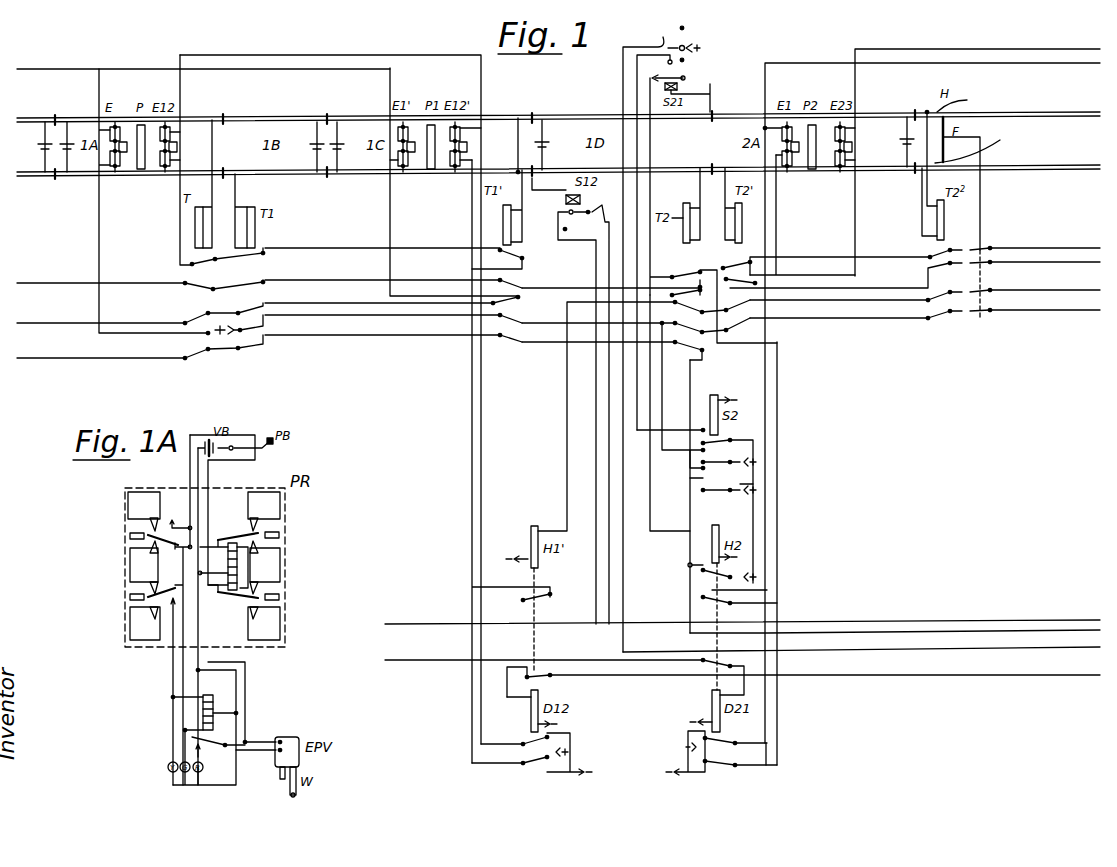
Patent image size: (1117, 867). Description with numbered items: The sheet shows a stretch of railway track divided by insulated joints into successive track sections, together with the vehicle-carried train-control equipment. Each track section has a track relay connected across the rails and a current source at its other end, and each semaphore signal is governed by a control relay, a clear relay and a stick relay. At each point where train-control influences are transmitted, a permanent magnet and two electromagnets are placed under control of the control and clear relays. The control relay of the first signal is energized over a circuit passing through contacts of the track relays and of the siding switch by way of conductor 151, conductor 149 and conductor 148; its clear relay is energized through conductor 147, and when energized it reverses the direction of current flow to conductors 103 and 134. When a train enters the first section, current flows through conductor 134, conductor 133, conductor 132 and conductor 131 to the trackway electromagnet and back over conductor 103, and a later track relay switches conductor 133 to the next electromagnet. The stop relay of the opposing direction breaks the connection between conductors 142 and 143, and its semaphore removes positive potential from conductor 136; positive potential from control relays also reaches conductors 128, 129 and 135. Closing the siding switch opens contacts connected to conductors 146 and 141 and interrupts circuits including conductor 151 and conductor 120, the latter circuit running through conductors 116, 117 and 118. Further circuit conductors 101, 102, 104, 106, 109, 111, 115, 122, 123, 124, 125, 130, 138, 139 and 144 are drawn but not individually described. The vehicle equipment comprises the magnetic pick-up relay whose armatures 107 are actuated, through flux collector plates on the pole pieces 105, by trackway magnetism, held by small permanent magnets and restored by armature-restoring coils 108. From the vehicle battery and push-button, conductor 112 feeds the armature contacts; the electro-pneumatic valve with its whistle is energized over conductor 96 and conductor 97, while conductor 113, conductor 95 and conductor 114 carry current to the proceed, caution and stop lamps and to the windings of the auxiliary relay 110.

In FIG. 1, the supply line 101 is at (31, 69).
In FIG. 1, the supply line 102 is at (1080, 63).
In FIG. 1, the conductor 103 is at (300, 55).
In FIG. 1A, the conductor 103 is at (130, 536).
In FIG. 1, the supply line 104 is at (1083, 49).
In FIG. 1, the pole piece 105 is at (58, 323).
In FIG. 1A, the pole piece 105 is at (152, 525).
In FIG. 1, the control line 106 is at (348, 280).
In FIG. 1, the armature 107 is at (567, 288).
In FIG. 1A, the armature 107 is at (148, 537).
In FIG. 1, the armature-restoring coil 108 is at (650, 488).
In FIG. 1A, the armature-restoring coil 108 is at (228, 561).
In FIG. 1, the control line 109 is at (650, 184).
In FIG. 1, the auxiliary relay 110 is at (622, 74).
In FIG. 1A, the auxiliary relay 110 is at (213, 690).
In FIG. 1, the control line 111 is at (754, 484).
In FIG. 1, the conductor 112 is at (60, 358).
In FIG. 1A, the conductor 112 is at (190, 476).
In FIG. 1, the conductor 113 is at (99, 208).
In FIG. 1A, the conductor 113 is at (150, 568).
In FIG. 1, the conductor 114 is at (348, 303).
In FIG. 1A, the conductor 114 is at (173, 690).
In FIG. 1, the connecting line 115 is at (390, 219).
In FIG. 1, the conductor 116 is at (320, 316).
In FIG. 1, the conductor 117 is at (567, 323).
In FIG. 1, the conductor 118 is at (663, 453).
In FIG. 1, the conductor 120 is at (1084, 311).
In FIG. 1, the control line 122 is at (320, 337).
In FIG. 1, the control line 123 is at (558, 346).
In FIG. 1, the connecting line 124 is at (690, 377).
In FIG. 1, the control line 125 is at (58, 283).
In FIG. 1, the conductor 128 is at (595, 252).
In FIG. 1, the conductor 129 is at (598, 443).
In FIG. 1, the control line 130 is at (449, 661).
In FIG. 1, the conductor 131 is at (180, 232).
In FIG. 1, the conductor 132 is at (348, 248).
In FIG. 1, the conductor 133 is at (472, 421).
In FIG. 1, the conductor 134 is at (472, 713).
In FIG. 1, the conductor 135 is at (690, 555).
In FIG. 1, the conductor 136 is at (622, 97).
In FIG. 1, the connecting line 138 is at (855, 213).
In FIG. 1, the control line 139 is at (918, 288).
In FIG. 1, the conductor 141 is at (1084, 263).
In FIG. 1, the conductor 142 is at (778, 722).
In FIG. 1, the conductor 143 is at (778, 524).
In FIG. 1, the control line 144 is at (838, 257).
In FIG. 1, the conductor 146 is at (1084, 248).
In FIG. 1, the conductor 147 is at (642, 677).
In FIG. 1, the conductor 148 is at (567, 421).
In FIG. 1, the conductor 149 is at (857, 301).
In FIG. 1, the conductor 151 is at (1084, 291).
In FIG. 1A, the conductor 95 is at (185, 730).
In FIG. 1A, the conductor 96 is at (245, 688).
In FIG. 1A, the conductor 97 is at (236, 706).